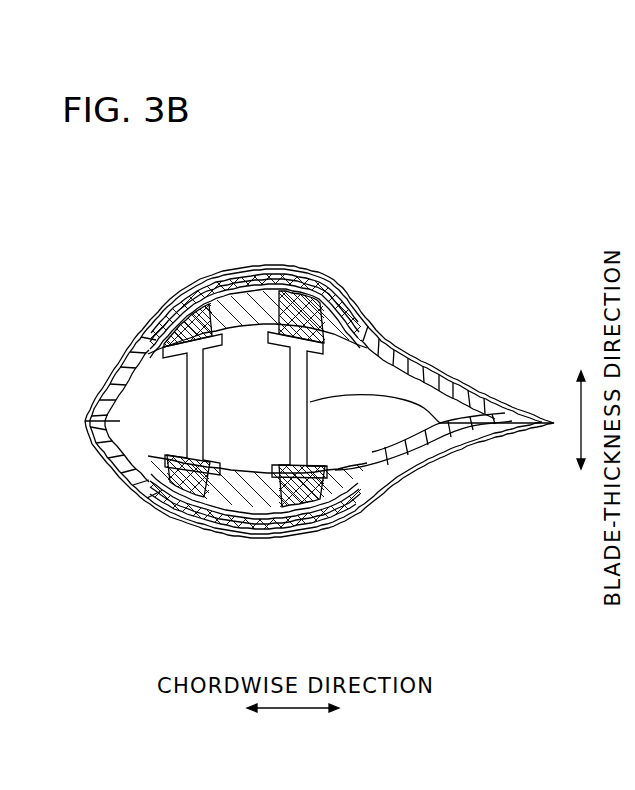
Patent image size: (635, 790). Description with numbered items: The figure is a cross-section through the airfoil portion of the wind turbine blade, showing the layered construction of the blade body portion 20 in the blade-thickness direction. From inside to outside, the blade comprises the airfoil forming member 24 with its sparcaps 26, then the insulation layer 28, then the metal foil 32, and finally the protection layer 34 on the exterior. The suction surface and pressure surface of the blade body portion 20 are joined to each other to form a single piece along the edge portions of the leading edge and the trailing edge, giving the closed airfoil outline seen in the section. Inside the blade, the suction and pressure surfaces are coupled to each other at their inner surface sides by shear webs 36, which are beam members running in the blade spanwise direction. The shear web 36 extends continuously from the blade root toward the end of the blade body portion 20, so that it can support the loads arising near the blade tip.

The blade body portion 20 is at (317, 87).
The airfoil forming member 24 is at (397, 353).
The sparcaps 26 is at (262, 262).
The insulation layer 28 is at (180, 280).
The metal foil 32 is at (327, 280).
The protection layer 34 is at (290, 262).
The shear web 36 is at (427, 384).